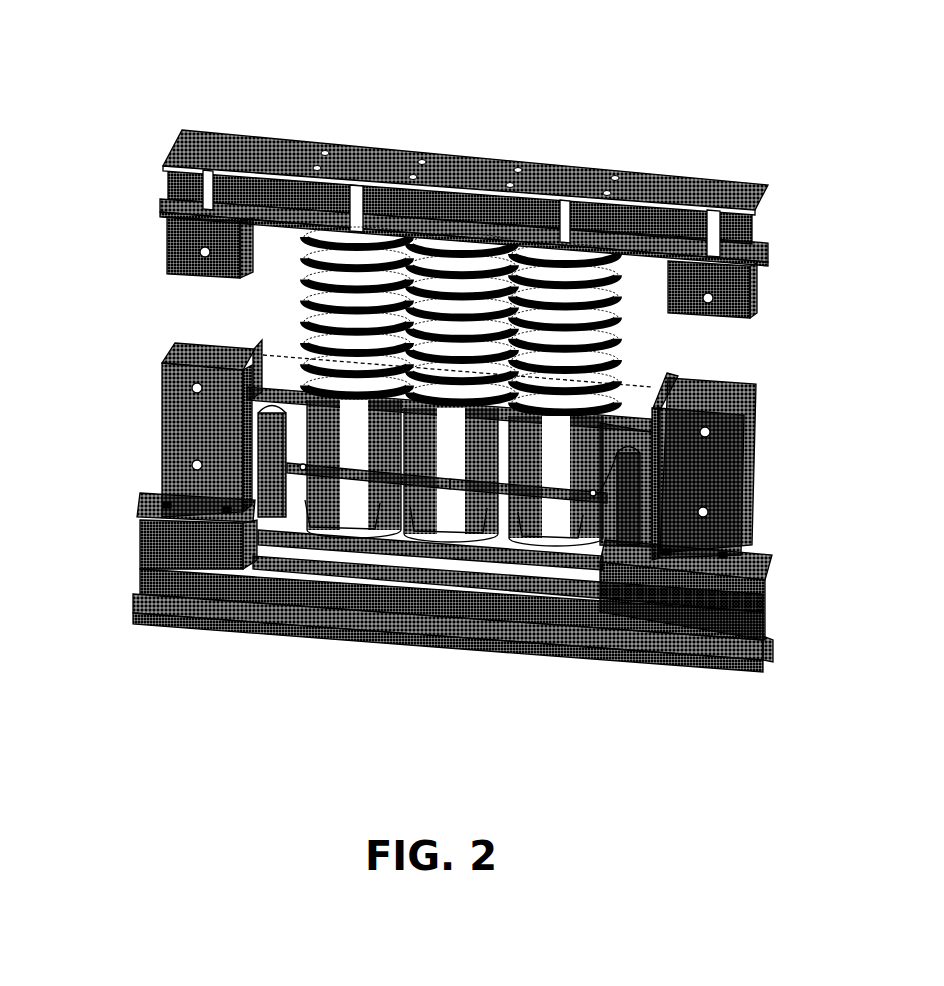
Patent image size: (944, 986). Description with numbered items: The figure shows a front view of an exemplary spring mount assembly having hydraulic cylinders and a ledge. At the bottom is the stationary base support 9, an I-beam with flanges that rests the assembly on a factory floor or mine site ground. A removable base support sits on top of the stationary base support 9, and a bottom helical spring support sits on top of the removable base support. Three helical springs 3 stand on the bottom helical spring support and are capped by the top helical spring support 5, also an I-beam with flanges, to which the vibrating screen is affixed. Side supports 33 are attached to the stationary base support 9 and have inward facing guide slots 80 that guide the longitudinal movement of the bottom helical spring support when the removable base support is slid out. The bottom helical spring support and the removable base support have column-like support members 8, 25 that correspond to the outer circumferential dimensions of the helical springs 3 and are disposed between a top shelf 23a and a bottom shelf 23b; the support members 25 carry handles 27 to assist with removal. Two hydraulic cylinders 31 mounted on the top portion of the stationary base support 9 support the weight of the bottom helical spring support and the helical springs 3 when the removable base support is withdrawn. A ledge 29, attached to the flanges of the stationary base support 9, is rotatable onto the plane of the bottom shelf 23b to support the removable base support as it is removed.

The helical springs 3 is at (348, 292).
The top helical spring support 5 is at (560, 178).
The support member 8 is at (338, 443).
The stationary base support 9 is at (500, 613).
The top shelf of the removable base support 23a is at (593, 493).
The bottom shelf of the removable base support 23b is at (297, 523).
The support member 25 is at (448, 517).
The handles 27 is at (538, 527).
The ledge 29 is at (713, 660).
The hydraulic cylinders 31 is at (439, 695).
The side supports 33 is at (183, 397).
The guide slots 80 is at (257, 423).